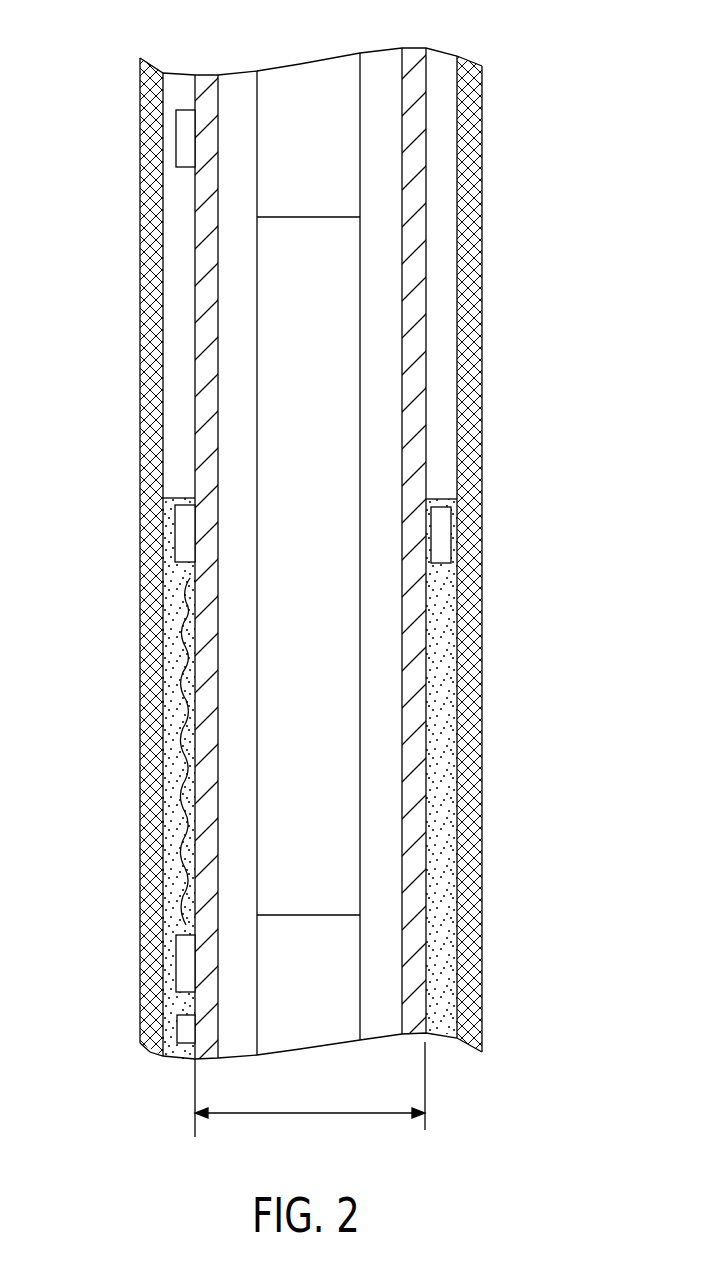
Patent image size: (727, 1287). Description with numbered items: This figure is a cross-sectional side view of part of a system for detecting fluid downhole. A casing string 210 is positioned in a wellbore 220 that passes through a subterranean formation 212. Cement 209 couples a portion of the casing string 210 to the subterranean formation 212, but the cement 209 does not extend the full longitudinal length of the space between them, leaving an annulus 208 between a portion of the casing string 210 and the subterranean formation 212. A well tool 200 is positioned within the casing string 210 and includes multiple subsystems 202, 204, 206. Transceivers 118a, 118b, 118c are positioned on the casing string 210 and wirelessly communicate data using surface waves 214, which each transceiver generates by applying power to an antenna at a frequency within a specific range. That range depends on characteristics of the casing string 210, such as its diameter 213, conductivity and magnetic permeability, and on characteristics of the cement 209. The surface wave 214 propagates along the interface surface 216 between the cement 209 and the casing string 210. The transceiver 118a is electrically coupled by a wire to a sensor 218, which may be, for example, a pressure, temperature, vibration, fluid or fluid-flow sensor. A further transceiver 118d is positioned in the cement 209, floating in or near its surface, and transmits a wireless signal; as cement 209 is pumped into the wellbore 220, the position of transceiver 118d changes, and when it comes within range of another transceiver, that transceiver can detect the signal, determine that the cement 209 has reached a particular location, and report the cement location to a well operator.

The well tool 200 is at (347, 62).
The subsystem 202 is at (296, 72).
The subsystem 204 is at (342, 1030).
The subsystem 206 is at (340, 716).
The annulus 208 is at (441, 313).
The cement 209 is at (446, 624).
The casing string 210 is at (413, 135).
The subterranean formation 212 is at (142, 682).
The diameter 213 is at (310, 1115).
The surface wave 214 is at (188, 647).
The interface surface 216 is at (432, 771).
The sensor 218 is at (178, 1027).
The wellbore 220 is at (478, 410).
The transceiver 118a is at (187, 965).
The transceiver 118b is at (187, 545).
The transceiver 118c is at (185, 117).
The transceiver 118d is at (440, 535).